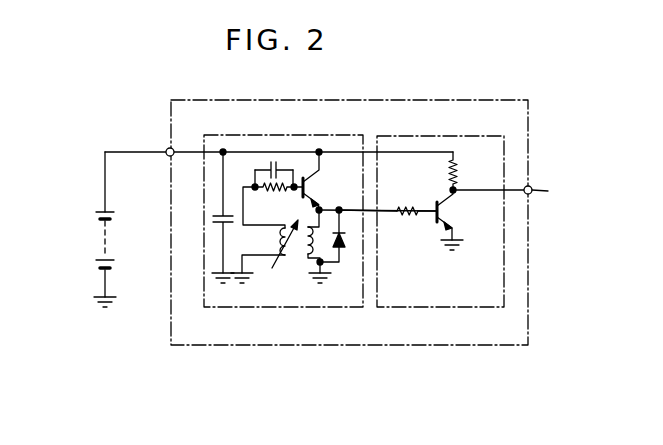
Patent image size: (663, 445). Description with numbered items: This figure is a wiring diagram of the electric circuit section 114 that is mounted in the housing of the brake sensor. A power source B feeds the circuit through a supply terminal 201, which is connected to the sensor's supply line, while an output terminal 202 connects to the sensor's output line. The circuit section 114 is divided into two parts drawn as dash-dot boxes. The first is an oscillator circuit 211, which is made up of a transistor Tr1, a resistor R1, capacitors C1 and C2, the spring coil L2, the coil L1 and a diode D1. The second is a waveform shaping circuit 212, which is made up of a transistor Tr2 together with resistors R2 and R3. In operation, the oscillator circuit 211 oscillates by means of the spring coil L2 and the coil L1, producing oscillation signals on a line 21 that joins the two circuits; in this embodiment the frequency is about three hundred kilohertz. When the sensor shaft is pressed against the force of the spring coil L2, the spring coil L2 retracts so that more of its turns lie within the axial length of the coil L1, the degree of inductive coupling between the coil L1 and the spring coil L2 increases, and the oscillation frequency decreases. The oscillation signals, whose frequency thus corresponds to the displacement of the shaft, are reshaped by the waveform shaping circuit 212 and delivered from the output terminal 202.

The electric circuit section 114 is at (529, 300).
The oscillator circuit 211 is at (300, 134).
The waveform shaping circuit 212 is at (449, 135).
The supply terminal 201 is at (166, 149).
The output terminal 202 is at (532, 191).
The line 21 is at (372, 213).
The power source B is at (104, 246).
The capacitor C1 is at (272, 160).
The capacitor C2 is at (212, 219).
The resistor R1 is at (277, 202).
The resistor R2 is at (412, 208).
The resistor R3 is at (457, 172).
The coil L1 is at (303, 258).
The spring coil L2 is at (286, 242).
The diode D1 is at (346, 246).
The transistor Tr1 is at (321, 187).
The transistor Tr2 is at (455, 215).